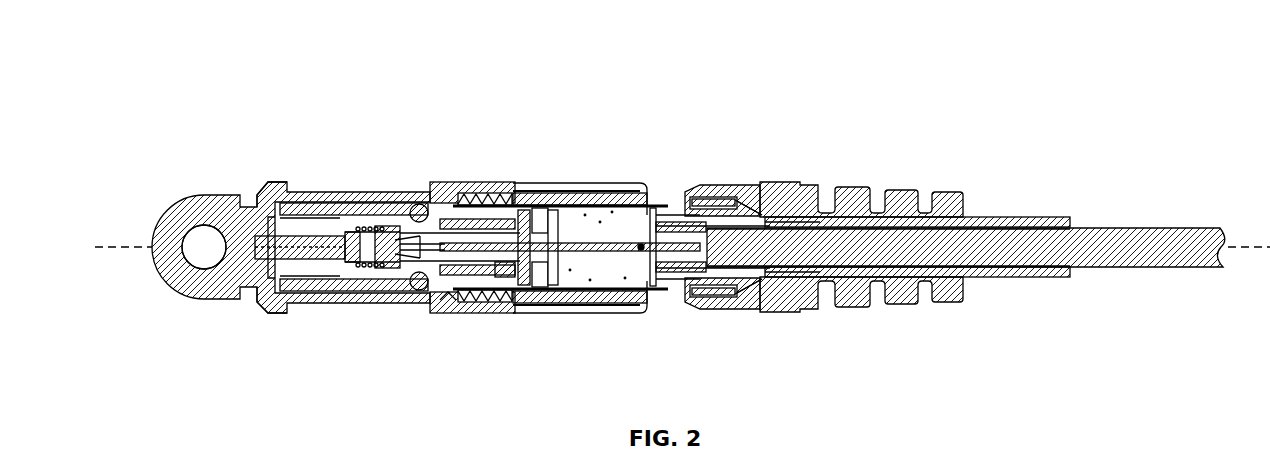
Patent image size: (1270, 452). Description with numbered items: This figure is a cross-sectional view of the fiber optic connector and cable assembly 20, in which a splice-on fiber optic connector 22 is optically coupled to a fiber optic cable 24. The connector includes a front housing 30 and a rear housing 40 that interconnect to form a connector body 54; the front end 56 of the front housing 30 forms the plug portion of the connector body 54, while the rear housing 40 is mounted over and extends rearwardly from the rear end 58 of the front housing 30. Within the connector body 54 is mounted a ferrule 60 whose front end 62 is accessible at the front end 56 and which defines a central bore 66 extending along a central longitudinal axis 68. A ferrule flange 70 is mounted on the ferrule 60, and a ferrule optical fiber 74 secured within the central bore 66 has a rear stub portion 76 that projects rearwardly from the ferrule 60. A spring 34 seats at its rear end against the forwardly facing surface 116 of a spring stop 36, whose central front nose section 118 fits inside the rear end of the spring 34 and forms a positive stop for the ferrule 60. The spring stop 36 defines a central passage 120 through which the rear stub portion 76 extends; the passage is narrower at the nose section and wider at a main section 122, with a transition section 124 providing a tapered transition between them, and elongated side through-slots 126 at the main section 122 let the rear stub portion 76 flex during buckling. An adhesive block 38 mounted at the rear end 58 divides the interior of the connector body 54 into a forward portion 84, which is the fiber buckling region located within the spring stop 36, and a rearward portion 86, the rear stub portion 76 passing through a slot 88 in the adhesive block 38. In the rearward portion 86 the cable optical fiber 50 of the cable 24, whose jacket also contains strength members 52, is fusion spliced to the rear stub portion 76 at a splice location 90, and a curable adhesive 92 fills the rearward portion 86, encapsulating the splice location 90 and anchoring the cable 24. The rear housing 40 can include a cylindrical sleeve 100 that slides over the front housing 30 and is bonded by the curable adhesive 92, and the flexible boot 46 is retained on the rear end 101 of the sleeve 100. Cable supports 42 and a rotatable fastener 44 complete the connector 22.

The fiber optic connector and cable assembly 20 is at (451, 66).
The splice-on fiber optic connector 22 is at (551, 178).
The fiber optic cable 24 is at (1121, 224).
The front housing 30 is at (363, 225).
The spring 34 is at (347, 300).
The spring stop 36 is at (468, 190).
The adhesive block 38 is at (530, 300).
The rear housing 40 is at (662, 188).
The cable supports 42 is at (690, 190).
The rotatable fastener 44 is at (612, 190).
The flexible boot 46 is at (810, 182).
The cable optical fiber 50 is at (708, 305).
The strength members 52 is at (718, 200).
The connector body 54 is at (445, 308).
The front end 56 is at (265, 305).
The rear end 58 is at (575, 300).
The ferrule 60 is at (279, 202).
The front end 62 is at (236, 200).
The central bore 66 is at (294, 224).
The central longitudinal axis 68 is at (123, 217).
The ferrule flange 70 is at (342, 218).
The ferrule optical fiber 74 is at (310, 300).
The rear stub portion 76 is at (497, 298).
The forward portion 84 is at (445, 218).
The rearward portion 86 is at (650, 300).
The slot 88 is at (572, 192).
The splice location 90 is at (641, 243).
The curable adhesive 92 is at (596, 277).
The cylindrical sleeve 100 is at (605, 300).
The rear end 101 is at (738, 308).
The forwardly facing surface 116 is at (383, 228).
The central front nose section 118 is at (390, 300).
The central passage 120 is at (510, 192).
The main section 122 is at (487, 305).
The transition section 124 is at (411, 208).
The elongated side through-slots 126 is at (490, 195).